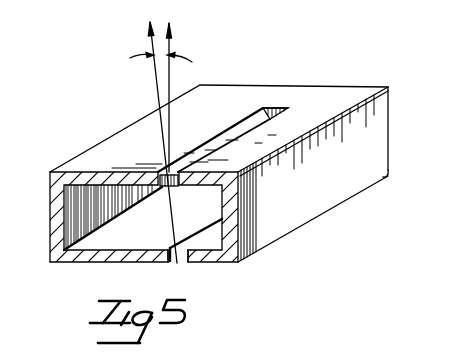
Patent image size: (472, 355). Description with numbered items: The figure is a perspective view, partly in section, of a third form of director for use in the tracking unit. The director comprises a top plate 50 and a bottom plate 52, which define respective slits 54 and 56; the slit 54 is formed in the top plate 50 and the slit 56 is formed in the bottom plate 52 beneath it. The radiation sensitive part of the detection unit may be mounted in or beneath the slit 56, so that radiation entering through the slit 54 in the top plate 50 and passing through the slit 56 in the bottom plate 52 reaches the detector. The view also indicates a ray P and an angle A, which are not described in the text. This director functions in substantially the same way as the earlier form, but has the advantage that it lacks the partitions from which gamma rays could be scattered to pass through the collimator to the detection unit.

The top plate 50 is at (211, 180).
The bottom plate 52 is at (205, 251).
The slit 54 is at (147, 198).
The slit 56 is at (169, 247).
The incident ray P is at (160, 132).
The angle A is at (167, 61).